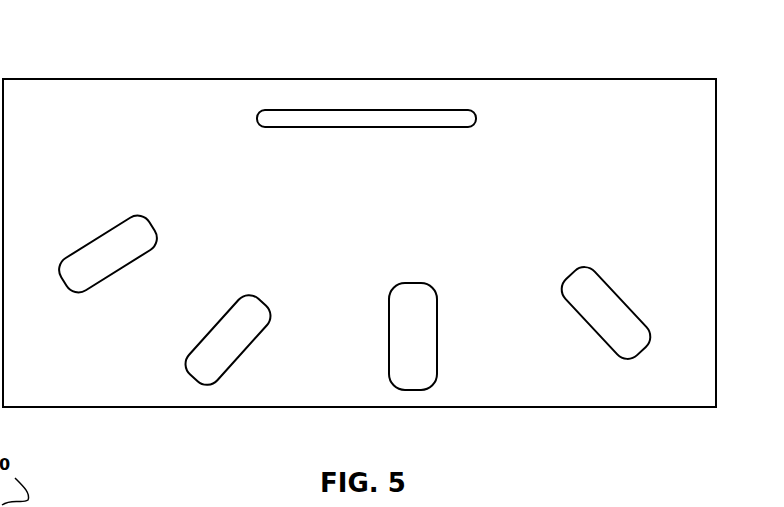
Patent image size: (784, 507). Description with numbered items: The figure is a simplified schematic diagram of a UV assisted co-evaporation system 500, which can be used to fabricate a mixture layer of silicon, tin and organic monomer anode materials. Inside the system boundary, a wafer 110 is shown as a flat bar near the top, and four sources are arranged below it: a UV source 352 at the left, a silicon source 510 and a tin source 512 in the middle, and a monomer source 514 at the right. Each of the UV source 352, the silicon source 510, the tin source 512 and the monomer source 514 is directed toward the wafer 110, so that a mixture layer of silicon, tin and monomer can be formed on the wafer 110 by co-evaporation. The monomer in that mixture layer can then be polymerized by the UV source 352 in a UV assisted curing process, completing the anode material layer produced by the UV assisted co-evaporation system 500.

The UV assisted co-evaporation system 500 is at (112, 59).
The wafer 110 is at (257, 120).
The UV source 352 is at (90, 232).
The silicon source 510 is at (192, 342).
The tin source 512 is at (388, 342).
The monomer source 514 is at (602, 278).